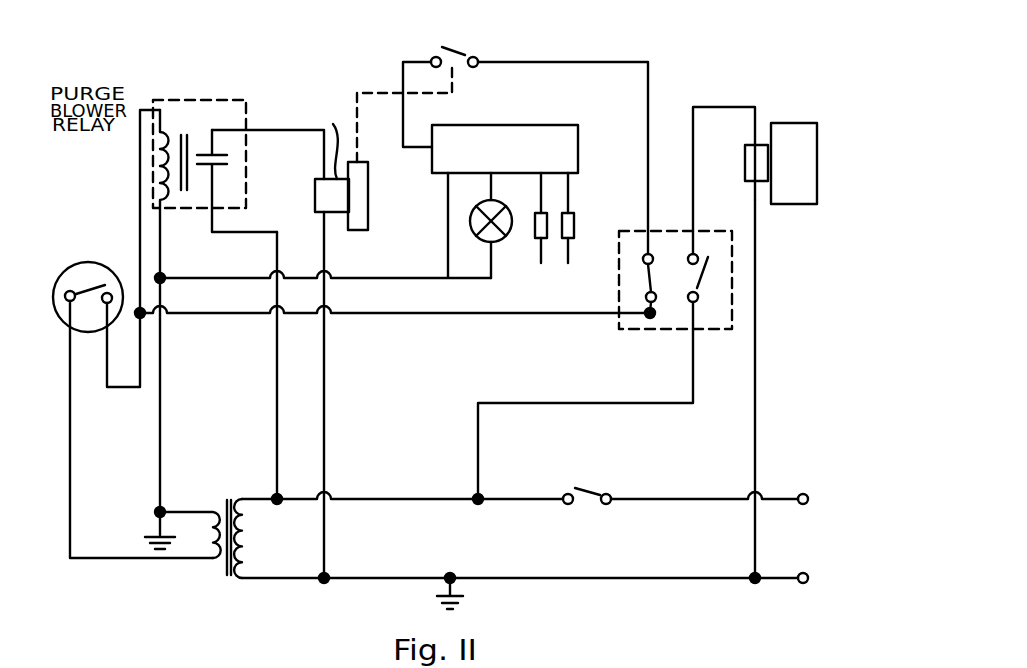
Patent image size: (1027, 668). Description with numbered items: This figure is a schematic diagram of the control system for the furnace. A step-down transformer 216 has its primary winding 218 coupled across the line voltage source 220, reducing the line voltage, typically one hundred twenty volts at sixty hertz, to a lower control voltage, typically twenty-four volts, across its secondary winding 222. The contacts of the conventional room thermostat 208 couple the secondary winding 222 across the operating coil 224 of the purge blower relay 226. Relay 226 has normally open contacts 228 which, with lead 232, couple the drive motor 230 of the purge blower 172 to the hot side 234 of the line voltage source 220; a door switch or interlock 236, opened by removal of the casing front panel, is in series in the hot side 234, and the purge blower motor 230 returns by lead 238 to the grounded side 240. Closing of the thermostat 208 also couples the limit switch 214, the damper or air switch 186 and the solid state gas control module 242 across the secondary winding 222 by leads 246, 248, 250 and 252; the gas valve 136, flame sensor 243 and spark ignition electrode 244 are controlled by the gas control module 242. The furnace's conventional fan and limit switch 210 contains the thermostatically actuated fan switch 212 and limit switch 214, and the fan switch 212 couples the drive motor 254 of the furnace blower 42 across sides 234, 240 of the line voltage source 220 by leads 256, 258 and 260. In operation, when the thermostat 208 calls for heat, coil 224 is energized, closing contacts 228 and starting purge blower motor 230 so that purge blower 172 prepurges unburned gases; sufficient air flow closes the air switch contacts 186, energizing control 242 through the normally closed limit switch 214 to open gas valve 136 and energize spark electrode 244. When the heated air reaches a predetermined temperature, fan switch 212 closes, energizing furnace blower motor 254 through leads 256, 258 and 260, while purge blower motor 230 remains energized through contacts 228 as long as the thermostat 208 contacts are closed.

The thermostat 208 is at (57, 320).
The purge blower relay 226 is at (185, 100).
The operating coil 224 is at (166, 160).
The normally open contacts 228 is at (222, 165).
The drive motor 230 is at (336, 181).
The purge blower 172 is at (368, 198).
The damper or air switch 186 is at (460, 66).
The lead 250 is at (403, 78).
The lead 248 is at (558, 62).
The gas control module 242 is at (578, 148).
The gas valve 136 is at (472, 230).
The flame sensor 243 is at (533, 232).
The spark ignition electrode 244 is at (574, 232).
The lead 252 is at (190, 278).
The lead 246 is at (385, 316).
The fan and limit switch 210 is at (655, 330).
The limit switch 214 is at (648, 273).
The fan switch 212 is at (700, 275).
The lead 258 is at (716, 107).
The lead 260 is at (759, 337).
The drive motor 254 is at (743, 162).
The furnace blower 42 is at (785, 205).
The lead 256 is at (518, 403).
The lead 232 is at (277, 385).
The lead 238 is at (330, 382).
The hot side 234 is at (348, 498).
The door switch or interlock 236 is at (590, 502).
The grounded side 240 is at (412, 580).
The line voltage source 220 is at (806, 504).
The secondary winding 222 is at (207, 536).
The step-down transformer 216 is at (224, 583).
The primary winding 218 is at (250, 536).